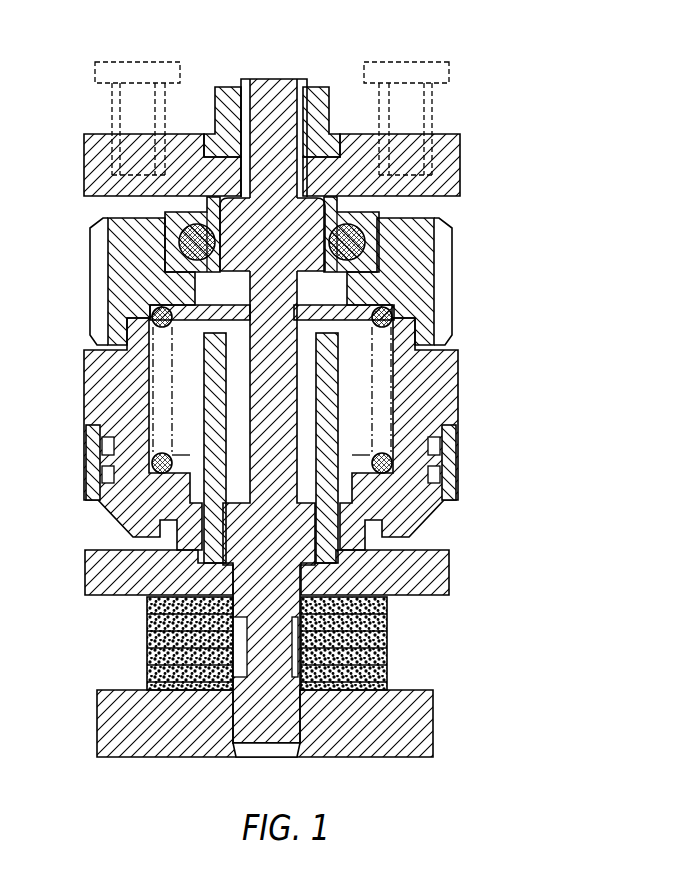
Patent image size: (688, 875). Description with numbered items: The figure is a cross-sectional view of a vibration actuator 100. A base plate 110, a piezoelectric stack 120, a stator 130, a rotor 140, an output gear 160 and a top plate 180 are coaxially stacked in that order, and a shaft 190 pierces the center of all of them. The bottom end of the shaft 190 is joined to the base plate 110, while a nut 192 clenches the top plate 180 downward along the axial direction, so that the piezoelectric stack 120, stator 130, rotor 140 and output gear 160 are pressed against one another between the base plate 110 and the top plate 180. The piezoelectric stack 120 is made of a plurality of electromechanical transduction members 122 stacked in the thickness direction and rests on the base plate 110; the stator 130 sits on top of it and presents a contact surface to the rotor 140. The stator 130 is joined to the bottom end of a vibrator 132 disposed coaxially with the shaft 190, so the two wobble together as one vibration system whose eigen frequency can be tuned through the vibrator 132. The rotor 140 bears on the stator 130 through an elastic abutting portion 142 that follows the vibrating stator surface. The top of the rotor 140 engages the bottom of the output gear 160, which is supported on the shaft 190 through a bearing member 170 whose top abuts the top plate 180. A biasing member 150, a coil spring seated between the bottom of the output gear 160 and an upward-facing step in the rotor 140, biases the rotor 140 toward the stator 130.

The vibration actuator 100 is at (568, 55).
The base plate 110 is at (433, 722).
The piezoelectric stack 120 is at (357, 643).
The electromechanical transduction member 122 is at (387, 673).
The stator 130 is at (443, 577).
The vibrator 132 is at (338, 425).
The rotor 140 is at (460, 390).
The abutting portion 142 is at (458, 522).
The biasing member 150 is at (433, 325).
The output gear 160 is at (447, 275).
The bearing member 170 is at (375, 213).
The top plate 180 is at (460, 168).
The shaft 190 is at (268, 78).
The nut 192 is at (227, 87).